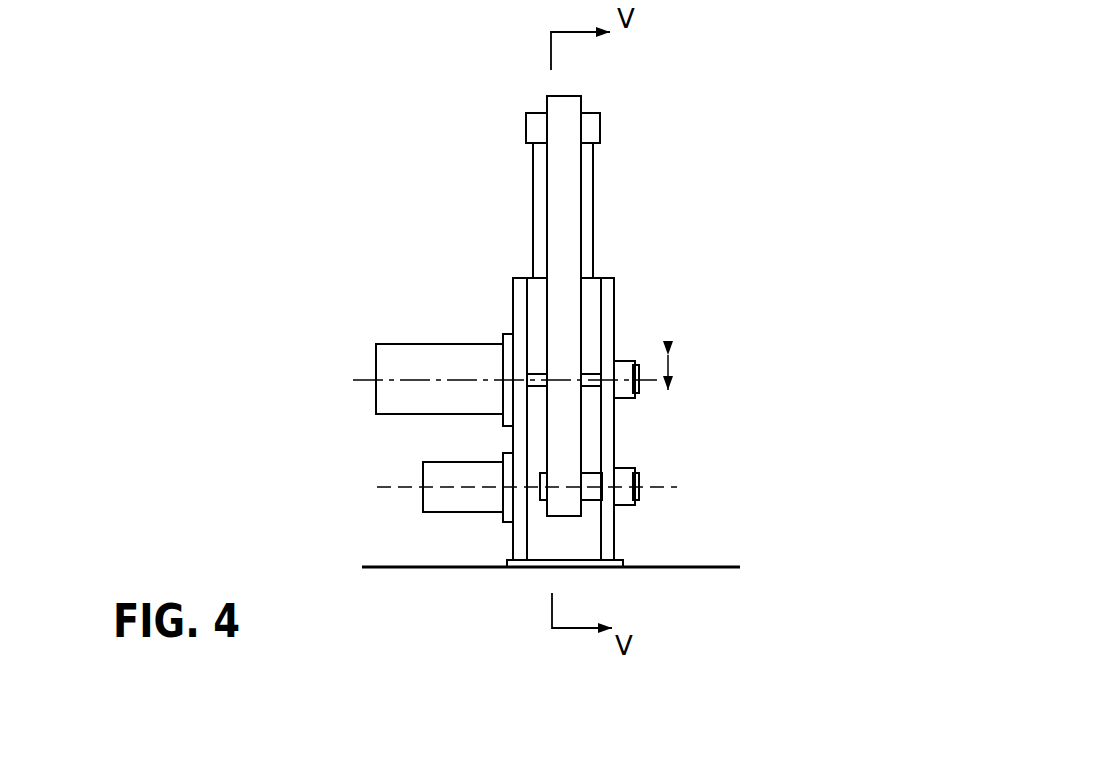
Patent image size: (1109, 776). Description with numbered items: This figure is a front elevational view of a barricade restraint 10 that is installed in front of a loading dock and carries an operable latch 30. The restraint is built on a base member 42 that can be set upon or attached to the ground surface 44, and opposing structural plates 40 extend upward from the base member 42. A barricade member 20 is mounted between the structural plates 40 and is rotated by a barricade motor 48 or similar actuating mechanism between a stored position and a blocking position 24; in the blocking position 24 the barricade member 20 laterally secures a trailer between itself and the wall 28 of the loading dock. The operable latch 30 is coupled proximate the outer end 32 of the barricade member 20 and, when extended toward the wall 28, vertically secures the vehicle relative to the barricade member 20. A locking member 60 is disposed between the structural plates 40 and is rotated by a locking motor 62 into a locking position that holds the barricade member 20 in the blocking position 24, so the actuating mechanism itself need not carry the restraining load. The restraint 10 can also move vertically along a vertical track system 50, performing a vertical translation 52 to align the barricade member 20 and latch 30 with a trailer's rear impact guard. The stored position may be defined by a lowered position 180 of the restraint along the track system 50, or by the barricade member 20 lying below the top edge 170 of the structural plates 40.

The barricade restraint 10 is at (670, 195).
The barricade member 20 is at (563, 210).
The blocking position 24 is at (605, 257).
The wall 28 is at (512, 173).
The operable latch 30 is at (602, 120).
The outer end 32 is at (558, 105).
The structural plates 40 is at (609, 333).
The base member 42 is at (617, 559).
The ground surface 44 is at (402, 567).
The barricade motor 48 is at (397, 365).
The vertical track system 50 is at (600, 192).
The vertical translation 52 is at (670, 368).
The locking member 60 is at (590, 467).
The locking motor 62 is at (432, 473).
The top edge 170 is at (522, 278).
The lowered position 180 is at (680, 474).